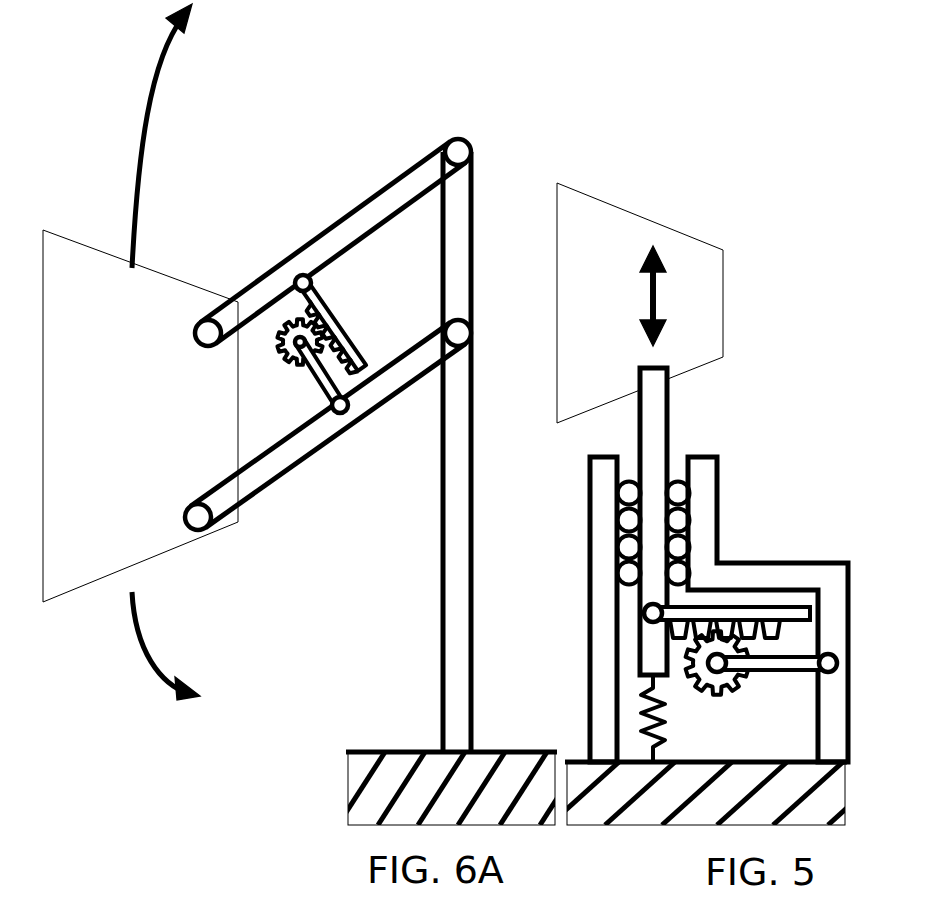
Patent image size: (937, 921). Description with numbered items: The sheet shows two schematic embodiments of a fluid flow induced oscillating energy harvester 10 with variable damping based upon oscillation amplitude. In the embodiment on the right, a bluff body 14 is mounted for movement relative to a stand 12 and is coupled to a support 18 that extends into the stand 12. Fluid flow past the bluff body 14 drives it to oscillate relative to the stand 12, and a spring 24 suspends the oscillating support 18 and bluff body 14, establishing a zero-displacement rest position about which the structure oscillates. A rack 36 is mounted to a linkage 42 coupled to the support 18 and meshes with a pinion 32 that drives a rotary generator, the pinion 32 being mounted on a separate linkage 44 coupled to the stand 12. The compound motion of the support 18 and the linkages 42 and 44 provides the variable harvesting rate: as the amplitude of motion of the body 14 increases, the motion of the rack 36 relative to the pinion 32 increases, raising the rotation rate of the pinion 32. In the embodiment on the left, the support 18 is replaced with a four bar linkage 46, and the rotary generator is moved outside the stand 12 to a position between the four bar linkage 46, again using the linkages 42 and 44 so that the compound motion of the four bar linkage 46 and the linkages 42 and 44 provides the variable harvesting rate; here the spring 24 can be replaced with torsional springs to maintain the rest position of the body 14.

In FIG. 6A, the fluid flow induced oscillating energy harvester 10 is at (318, 576).
In FIG. 5, the fluid flow induced oscillating energy harvester 10 is at (778, 409).
In FIG. 6A, the stand 12 is at (442, 548).
In FIG. 5, the stand 12 is at (718, 504).
In FIG. 6A, the bluff body 14 is at (114, 370).
In FIG. 5, the bluff body 14 is at (724, 307).
In FIG. 5, the support 18 is at (668, 433).
In FIG. 5, the spring 24 is at (662, 735).
In FIG. 6A, the pinion 32 is at (288, 364).
In FIG. 5, the pinion 32 is at (727, 694).
In FIG. 6A, the rack 36 is at (298, 318).
In FIG. 5, the rack 36 is at (682, 641).
In FIG. 6A, the linkage 42 is at (326, 310).
In FIG. 5, the linkage 42 is at (797, 623).
In FIG. 6A, the linkage 44 is at (316, 388).
In FIG. 5, the linkage 44 is at (770, 672).
In FIG. 6A, the four bar linkage 46 is at (325, 232).